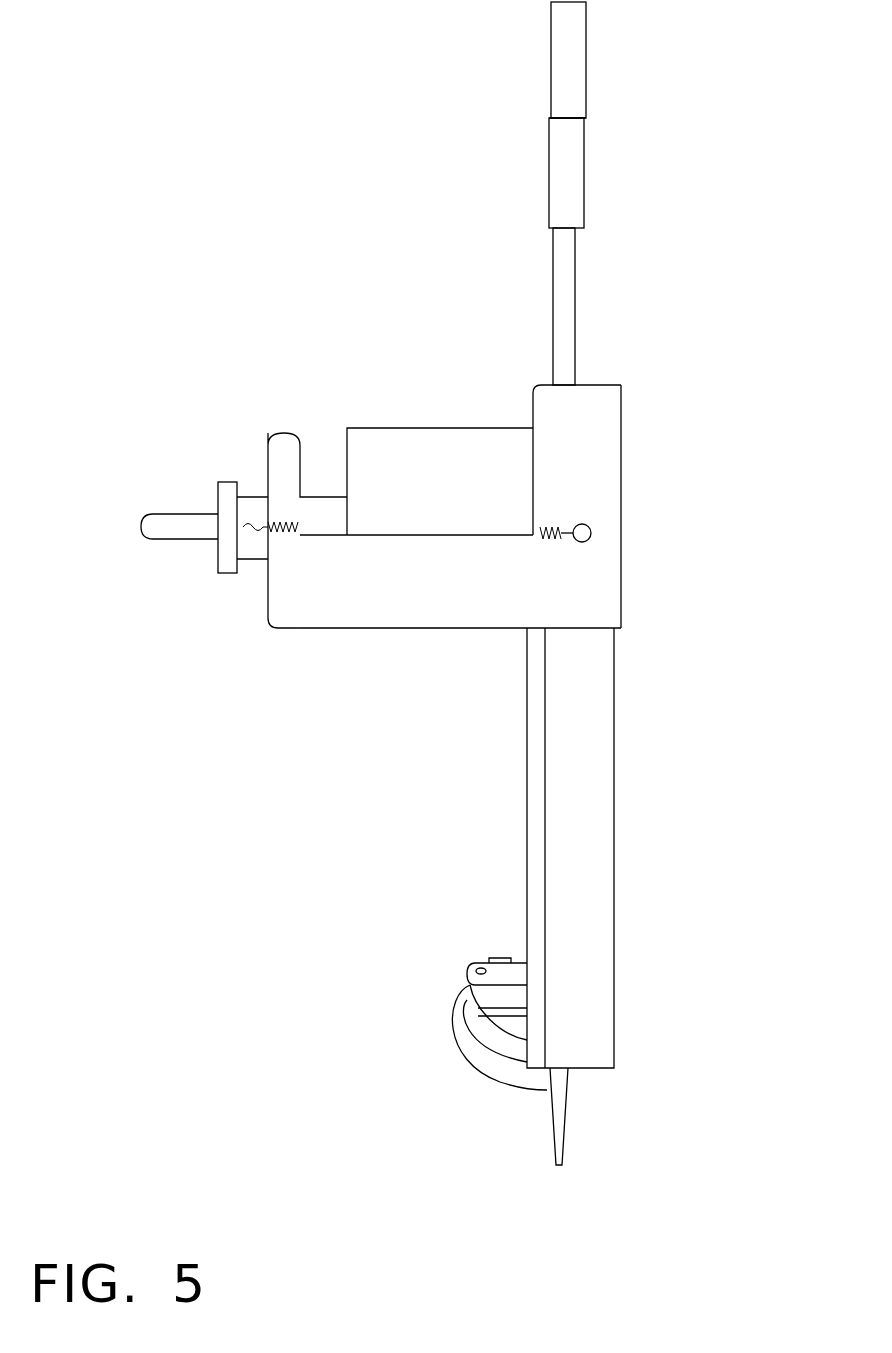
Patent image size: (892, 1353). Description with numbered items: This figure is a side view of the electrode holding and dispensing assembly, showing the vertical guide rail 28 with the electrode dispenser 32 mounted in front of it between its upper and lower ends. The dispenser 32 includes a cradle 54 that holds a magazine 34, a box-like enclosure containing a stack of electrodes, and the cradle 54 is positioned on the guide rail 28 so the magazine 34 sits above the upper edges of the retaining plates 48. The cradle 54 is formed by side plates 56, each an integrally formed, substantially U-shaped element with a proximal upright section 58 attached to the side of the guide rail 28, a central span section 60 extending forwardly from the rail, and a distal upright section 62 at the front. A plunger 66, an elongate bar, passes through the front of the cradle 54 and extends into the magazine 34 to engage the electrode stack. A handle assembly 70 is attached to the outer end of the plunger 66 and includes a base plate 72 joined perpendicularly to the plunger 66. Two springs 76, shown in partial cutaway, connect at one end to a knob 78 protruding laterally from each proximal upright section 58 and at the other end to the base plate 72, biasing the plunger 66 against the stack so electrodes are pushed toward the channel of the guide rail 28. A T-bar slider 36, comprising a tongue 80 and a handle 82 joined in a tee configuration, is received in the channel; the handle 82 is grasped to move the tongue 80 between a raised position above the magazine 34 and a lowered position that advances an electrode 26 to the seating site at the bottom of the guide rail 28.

The electrode 26 is at (566, 1120).
The guide rail 28 is at (617, 760).
The electrode dispenser 32 is at (310, 408).
The magazine 34 is at (413, 437).
The T-bar slider 36 is at (585, 75).
The retaining plates 48 is at (527, 804).
The cradle 54 is at (268, 628).
The side plates 56 is at (358, 628).
The proximal upright section 58 is at (596, 422).
The central span section 60 is at (440, 608).
The distal upright section 62 is at (280, 447).
The plunger 66 is at (252, 572).
The handle assembly 70 is at (213, 497).
The base plate 72 is at (224, 557).
The springs 76 is at (552, 520).
The knob 78 is at (588, 541).
The tongue 80 is at (577, 305).
The handle 82 is at (548, 133).